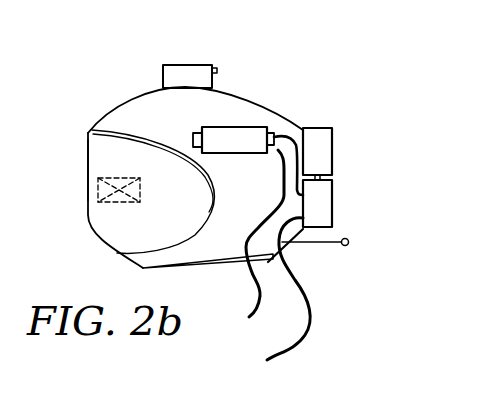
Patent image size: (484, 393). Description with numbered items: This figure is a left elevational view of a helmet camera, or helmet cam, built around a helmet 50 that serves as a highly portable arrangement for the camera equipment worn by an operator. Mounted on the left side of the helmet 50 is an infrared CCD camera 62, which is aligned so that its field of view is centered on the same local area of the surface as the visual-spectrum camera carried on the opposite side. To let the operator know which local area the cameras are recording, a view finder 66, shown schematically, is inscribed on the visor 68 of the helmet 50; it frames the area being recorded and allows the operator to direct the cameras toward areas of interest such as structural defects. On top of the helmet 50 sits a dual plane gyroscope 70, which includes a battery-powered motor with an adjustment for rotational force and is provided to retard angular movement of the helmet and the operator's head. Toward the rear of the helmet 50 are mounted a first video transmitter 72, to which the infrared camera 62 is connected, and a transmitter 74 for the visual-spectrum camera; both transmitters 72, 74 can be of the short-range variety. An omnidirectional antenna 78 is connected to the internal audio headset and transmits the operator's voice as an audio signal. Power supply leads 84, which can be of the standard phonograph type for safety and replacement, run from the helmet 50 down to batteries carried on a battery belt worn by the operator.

The helmet 50 is at (100, 76).
The dual plane gyroscope 70 is at (193, 65).
The infrared CCD camera 62 is at (248, 127).
The visor 68 is at (87, 157).
The view finder 66 is at (97, 192).
The transmitter 74 is at (333, 150).
The first video transmitter 72 is at (333, 201).
The omnidirectional antenna 78 is at (347, 247).
The power supply leads 84 is at (250, 308).